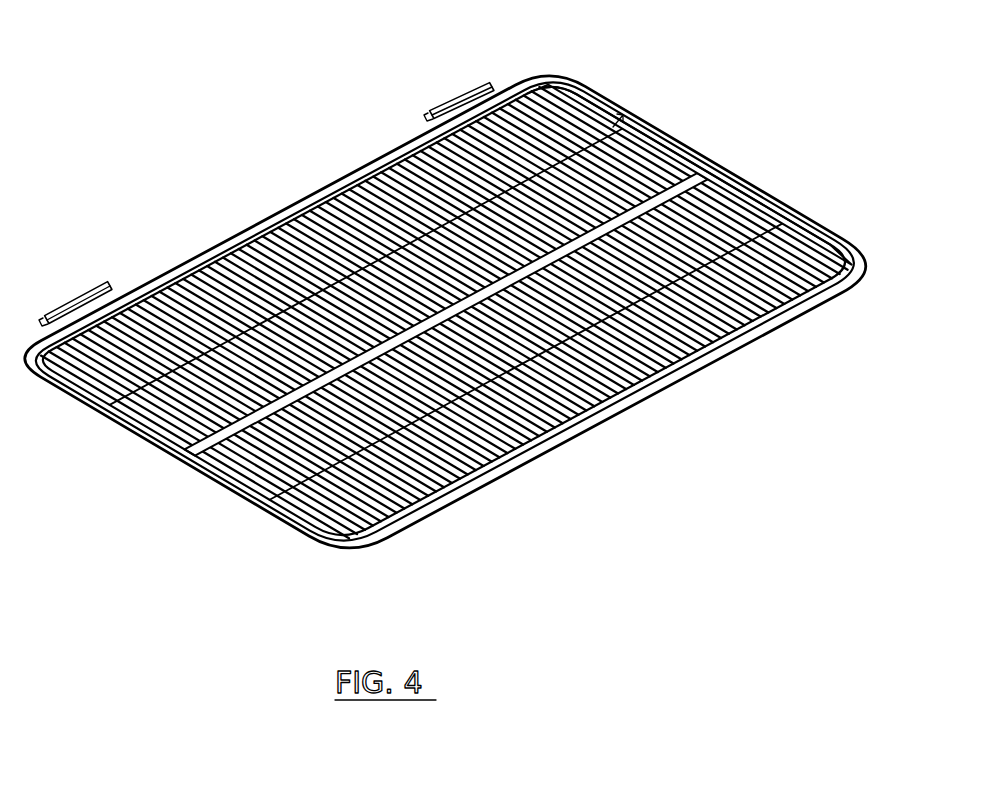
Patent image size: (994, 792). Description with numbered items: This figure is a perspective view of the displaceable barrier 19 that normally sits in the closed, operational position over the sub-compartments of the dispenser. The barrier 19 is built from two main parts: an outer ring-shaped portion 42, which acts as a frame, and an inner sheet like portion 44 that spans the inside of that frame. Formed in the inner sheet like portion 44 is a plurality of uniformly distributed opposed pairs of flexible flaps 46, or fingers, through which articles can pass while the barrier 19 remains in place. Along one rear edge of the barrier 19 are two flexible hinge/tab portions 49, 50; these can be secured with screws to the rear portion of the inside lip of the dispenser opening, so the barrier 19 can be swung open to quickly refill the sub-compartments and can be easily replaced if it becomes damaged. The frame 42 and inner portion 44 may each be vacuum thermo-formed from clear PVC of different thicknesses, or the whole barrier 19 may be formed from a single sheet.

The barrier 19 is at (445, 280).
The outer ring-shaped portion 42 is at (680, 147).
The inner sheet like portion 44 is at (726, 207).
The flexible flaps 46 is at (295, 503).
The flexible hinge/tab portion 49 is at (60, 309).
The flexible hinge/tab portion 50 is at (447, 100).